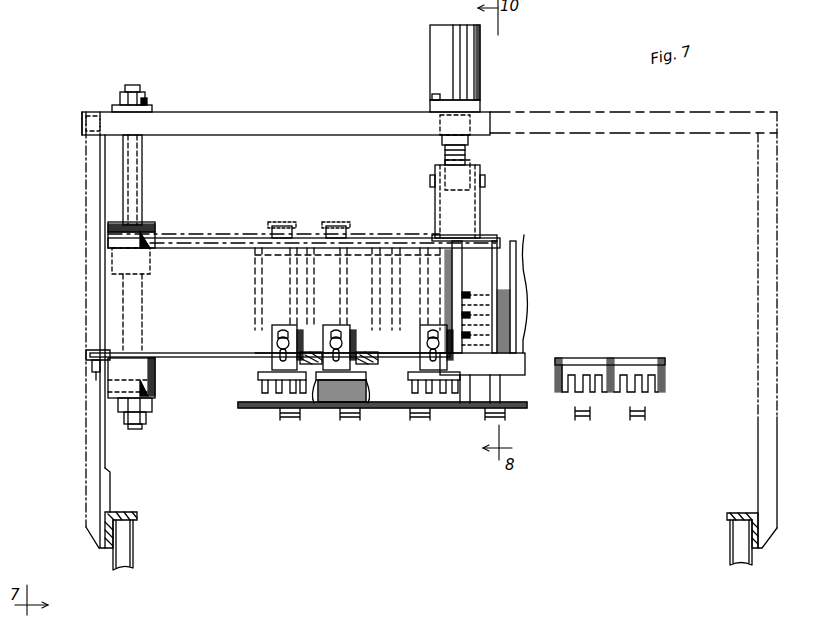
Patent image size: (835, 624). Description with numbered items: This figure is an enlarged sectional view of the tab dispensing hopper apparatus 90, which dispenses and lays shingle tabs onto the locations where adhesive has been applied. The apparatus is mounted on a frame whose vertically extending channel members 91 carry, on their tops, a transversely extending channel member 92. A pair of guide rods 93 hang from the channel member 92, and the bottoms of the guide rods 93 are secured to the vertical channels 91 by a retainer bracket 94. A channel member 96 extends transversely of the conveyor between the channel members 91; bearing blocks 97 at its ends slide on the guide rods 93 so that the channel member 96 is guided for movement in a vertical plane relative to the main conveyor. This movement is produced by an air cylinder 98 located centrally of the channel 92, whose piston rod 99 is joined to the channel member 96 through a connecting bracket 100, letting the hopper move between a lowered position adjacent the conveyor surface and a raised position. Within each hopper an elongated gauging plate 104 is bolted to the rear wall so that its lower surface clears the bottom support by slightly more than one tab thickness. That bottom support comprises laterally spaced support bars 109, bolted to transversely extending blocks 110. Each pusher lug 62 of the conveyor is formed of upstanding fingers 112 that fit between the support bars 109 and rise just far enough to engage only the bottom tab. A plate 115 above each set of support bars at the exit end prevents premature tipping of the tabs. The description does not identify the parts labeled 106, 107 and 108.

The tab dispensing hopper apparatus 90 is at (215, 92).
The vertically extending channel members 91 is at (90, 430).
The transversely extending channel member 92 is at (316, 112).
The guide rods 93 is at (135, 187).
The retainer bracket 94 is at (150, 405).
The channel member 96 is at (214, 268).
The bearing blocks 97 is at (150, 252).
The air cylinder 98 is at (430, 45).
The piston rod 99 is at (470, 160).
The connecting bracket 100 is at (435, 208).
The gauging plate 104 is at (290, 228).
The slide bar 106 is at (268, 360).
The clamp block 107 is at (278, 332).
The clamp screw 108 is at (282, 343).
The support bars 109 is at (298, 397).
The transversely extending blocks 110 is at (612, 362).
The upstanding fingers 112 is at (515, 408).
The plate 115 is at (382, 400).
The pusher lugs 62 is at (462, 395).